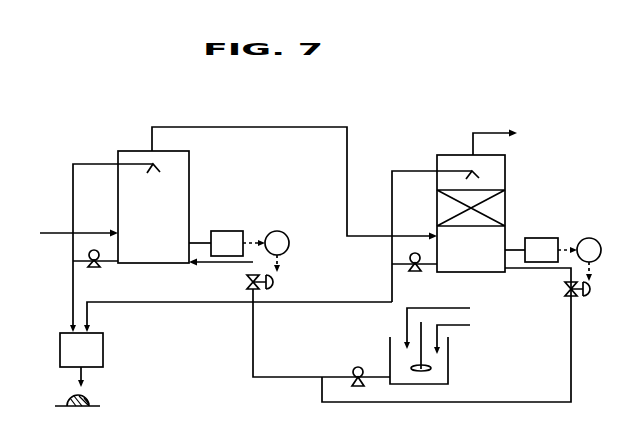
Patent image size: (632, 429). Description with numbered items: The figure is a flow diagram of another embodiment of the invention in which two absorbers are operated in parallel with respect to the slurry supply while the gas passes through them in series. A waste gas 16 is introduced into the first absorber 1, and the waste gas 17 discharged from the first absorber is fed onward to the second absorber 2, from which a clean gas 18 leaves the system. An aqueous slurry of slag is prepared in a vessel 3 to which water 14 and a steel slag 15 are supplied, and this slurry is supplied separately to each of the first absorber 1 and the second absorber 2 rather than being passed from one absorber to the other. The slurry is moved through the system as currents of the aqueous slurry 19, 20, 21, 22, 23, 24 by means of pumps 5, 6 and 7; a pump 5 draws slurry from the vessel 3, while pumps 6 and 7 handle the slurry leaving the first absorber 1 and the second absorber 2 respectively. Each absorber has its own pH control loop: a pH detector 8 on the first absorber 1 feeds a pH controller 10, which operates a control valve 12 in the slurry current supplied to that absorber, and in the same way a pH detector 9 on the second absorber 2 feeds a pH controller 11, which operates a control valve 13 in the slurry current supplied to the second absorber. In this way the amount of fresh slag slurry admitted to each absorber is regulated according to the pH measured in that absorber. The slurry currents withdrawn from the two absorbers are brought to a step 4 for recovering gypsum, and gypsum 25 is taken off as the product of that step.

The first absorber 1 is at (153, 207).
The second absorber 2 is at (471, 213).
The vessel for preparing an aqueous slurry of slag 3 is at (419, 353).
The step for recovering gypsum 4 is at (81, 350).
The pump 5 is at (359, 367).
The pump 6 is at (93, 270).
The pump 7 is at (415, 275).
The pH detector 8 is at (216, 243).
The pH detector 9 is at (531, 250).
The pH controller 10 is at (266, 251).
The pH controller 11 is at (580, 259).
The control valve 12 is at (276, 285).
The control valve 13 is at (592, 291).
The water 14 is at (464, 335).
The steel slag 15 is at (449, 324).
The waste gas 16 is at (67, 234).
The waste gas discharged from the first absorber 17 is at (294, 172).
The clean gas 18 is at (507, 140).
The current of the aqueous slurry 19 is at (321, 333).
The current of the aqueous slurry 20 is at (446, 335).
The current of the aqueous slurry 21 is at (111, 248).
The current of the aqueous slurry 22 is at (432, 236).
The current of the aqueous slurry 23 is at (82, 286).
The current of the aqueous slurry 24 is at (238, 296).
The gypsum 25 is at (90, 386).